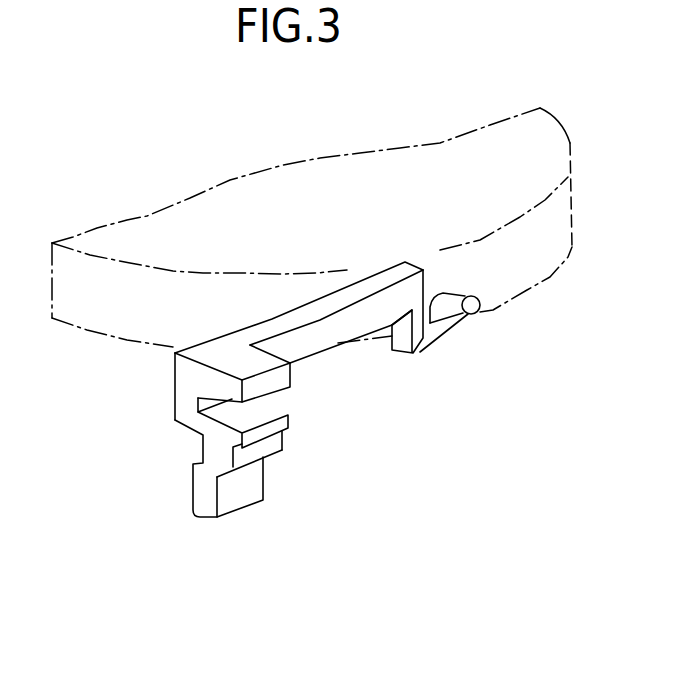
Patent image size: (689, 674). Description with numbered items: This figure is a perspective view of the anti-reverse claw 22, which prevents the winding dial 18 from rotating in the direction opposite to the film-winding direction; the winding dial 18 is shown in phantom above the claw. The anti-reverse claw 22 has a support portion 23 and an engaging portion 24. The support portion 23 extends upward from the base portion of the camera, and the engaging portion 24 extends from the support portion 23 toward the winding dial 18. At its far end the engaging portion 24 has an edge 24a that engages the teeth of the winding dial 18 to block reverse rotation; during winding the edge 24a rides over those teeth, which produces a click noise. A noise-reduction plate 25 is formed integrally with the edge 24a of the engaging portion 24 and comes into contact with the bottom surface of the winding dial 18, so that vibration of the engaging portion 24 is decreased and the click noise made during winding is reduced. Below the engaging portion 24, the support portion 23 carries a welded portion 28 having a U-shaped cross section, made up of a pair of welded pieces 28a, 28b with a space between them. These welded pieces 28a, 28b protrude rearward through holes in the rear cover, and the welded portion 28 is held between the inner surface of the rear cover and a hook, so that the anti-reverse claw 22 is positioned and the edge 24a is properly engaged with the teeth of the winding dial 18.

The winding dial 18 is at (158, 230).
The anti-reverse claw 22 is at (173, 373).
The support portion 23 is at (193, 482).
The engaging portion 24 is at (355, 285).
The edge 24a is at (407, 263).
The noise-reduction plate 25 is at (478, 312).
The welded portion 28 is at (332, 438).
The welded piece 28a is at (290, 378).
The welded piece 28b is at (288, 425).